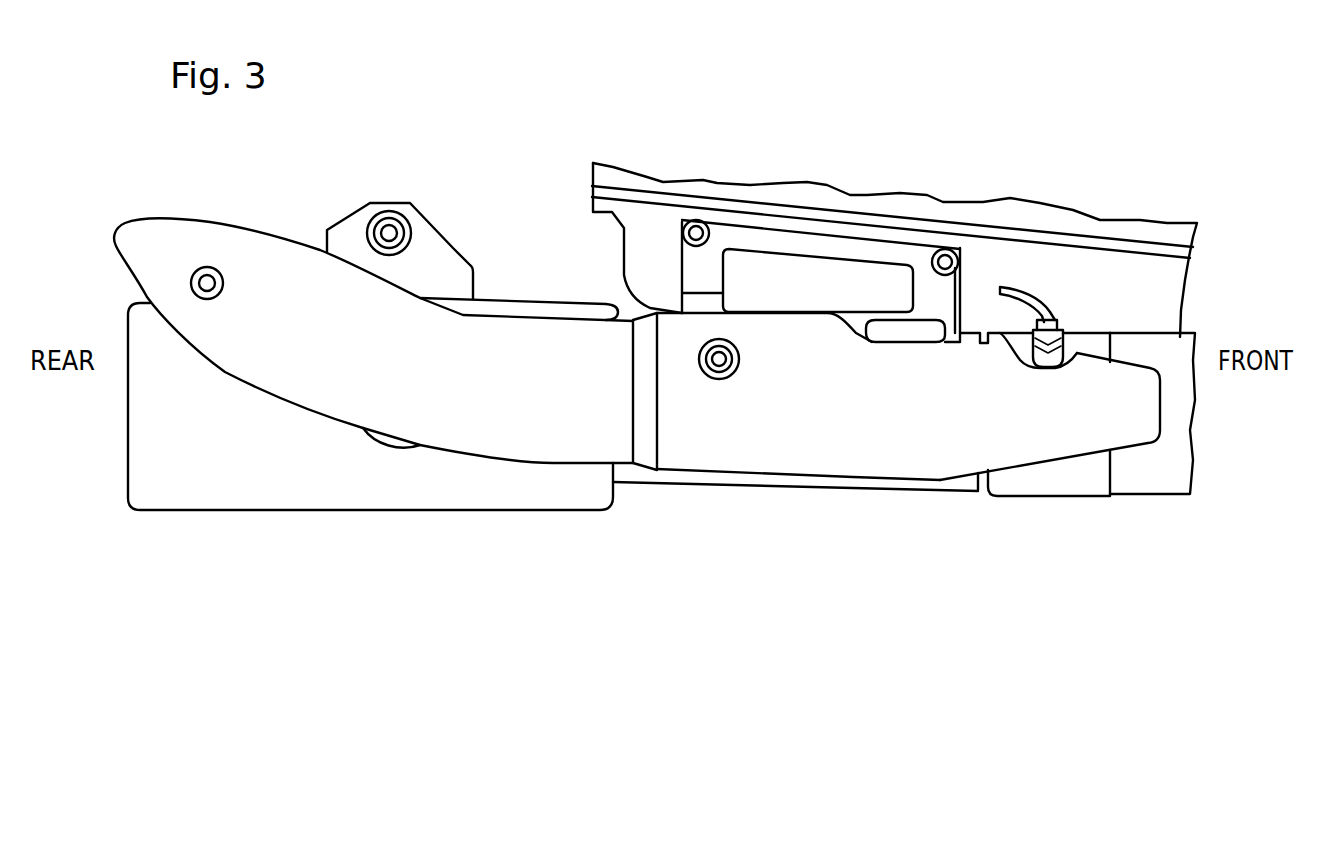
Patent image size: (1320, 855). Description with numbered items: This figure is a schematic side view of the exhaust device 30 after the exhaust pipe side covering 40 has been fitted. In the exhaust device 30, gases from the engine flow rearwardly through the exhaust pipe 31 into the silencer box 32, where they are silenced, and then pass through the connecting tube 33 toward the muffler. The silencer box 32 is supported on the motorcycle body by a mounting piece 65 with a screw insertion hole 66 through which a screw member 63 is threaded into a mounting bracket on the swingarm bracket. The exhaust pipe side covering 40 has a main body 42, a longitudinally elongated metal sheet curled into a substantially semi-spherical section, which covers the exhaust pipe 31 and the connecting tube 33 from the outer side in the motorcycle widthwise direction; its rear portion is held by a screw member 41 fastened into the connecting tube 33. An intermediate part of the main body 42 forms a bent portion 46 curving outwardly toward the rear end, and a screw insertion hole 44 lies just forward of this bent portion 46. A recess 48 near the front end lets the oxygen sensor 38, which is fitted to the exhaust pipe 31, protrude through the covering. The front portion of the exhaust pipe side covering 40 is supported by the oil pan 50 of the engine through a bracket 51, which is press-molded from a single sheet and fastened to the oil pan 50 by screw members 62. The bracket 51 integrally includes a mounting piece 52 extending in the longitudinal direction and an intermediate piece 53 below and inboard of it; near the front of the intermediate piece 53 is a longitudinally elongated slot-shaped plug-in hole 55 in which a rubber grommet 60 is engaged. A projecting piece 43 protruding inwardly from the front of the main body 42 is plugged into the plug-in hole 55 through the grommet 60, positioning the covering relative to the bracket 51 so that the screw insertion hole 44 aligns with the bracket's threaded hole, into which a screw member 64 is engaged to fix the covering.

The exhaust device 30 is at (637, 405).
The exhaust pipe 31 is at (887, 483).
The silencer box 32 is at (440, 500).
The connecting tube 33 is at (393, 443).
The oxygen sensor 38 is at (1060, 323).
The exhaust pipe side covering 40 is at (637, 405).
The screw member 41 is at (207, 276).
The main body 42 is at (793, 450).
The projecting piece 43 is at (915, 345).
The screw insertion hole 44 is at (707, 372).
The bent portion 46 is at (632, 392).
The recess 48 is at (1057, 370).
The oil pan 50 is at (1153, 282).
The bracket 51 is at (843, 251).
The mounting piece 52 is at (893, 252).
The intermediate piece 53 is at (703, 305).
The plug-in hole 55 is at (905, 300).
The grommet 60 is at (937, 318).
The screw member 62 is at (696, 220).
The screw member 63 is at (389, 233).
The screw member 64 is at (722, 380).
The mounting piece 65 is at (442, 262).
The screw insertion hole 66 is at (373, 220).